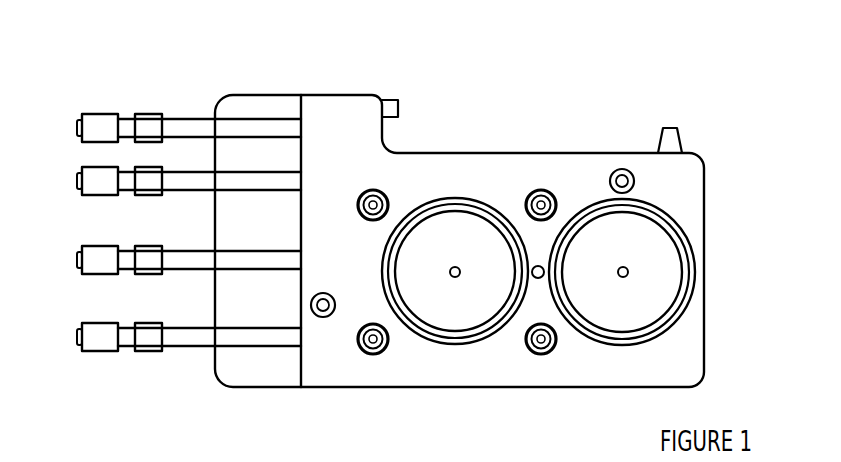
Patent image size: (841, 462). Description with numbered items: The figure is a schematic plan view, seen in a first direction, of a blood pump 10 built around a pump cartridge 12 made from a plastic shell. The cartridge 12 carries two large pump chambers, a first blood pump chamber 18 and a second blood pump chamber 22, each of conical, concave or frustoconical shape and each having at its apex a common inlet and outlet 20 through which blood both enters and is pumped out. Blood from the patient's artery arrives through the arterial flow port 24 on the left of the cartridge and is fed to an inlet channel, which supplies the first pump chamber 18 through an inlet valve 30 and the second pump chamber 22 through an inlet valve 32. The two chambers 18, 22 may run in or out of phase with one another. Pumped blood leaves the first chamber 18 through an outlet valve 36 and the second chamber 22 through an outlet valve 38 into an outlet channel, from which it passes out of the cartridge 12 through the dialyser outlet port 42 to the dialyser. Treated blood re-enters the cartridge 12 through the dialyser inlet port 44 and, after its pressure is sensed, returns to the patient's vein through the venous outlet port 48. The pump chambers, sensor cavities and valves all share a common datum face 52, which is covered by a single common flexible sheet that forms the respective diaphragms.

The blood pump 10 is at (508, 143).
The pump cartridge 12 is at (705, 185).
The pump chamber 18 is at (472, 307).
The common inlet and outlet 20 is at (454, 278).
The second blood pump chamber 22 is at (645, 308).
The arterial flow port 24 is at (108, 337).
The inlet valve 30 is at (372, 352).
The inlet valve 32 is at (541, 353).
The outlet valve 36 is at (372, 190).
The outlet valve 38 is at (545, 192).
The dialyser outlet port 42 is at (90, 122).
The dialyser inlet port 44 is at (97, 182).
The venous outlet port 48 is at (98, 258).
The common datum face 52 is at (682, 170).